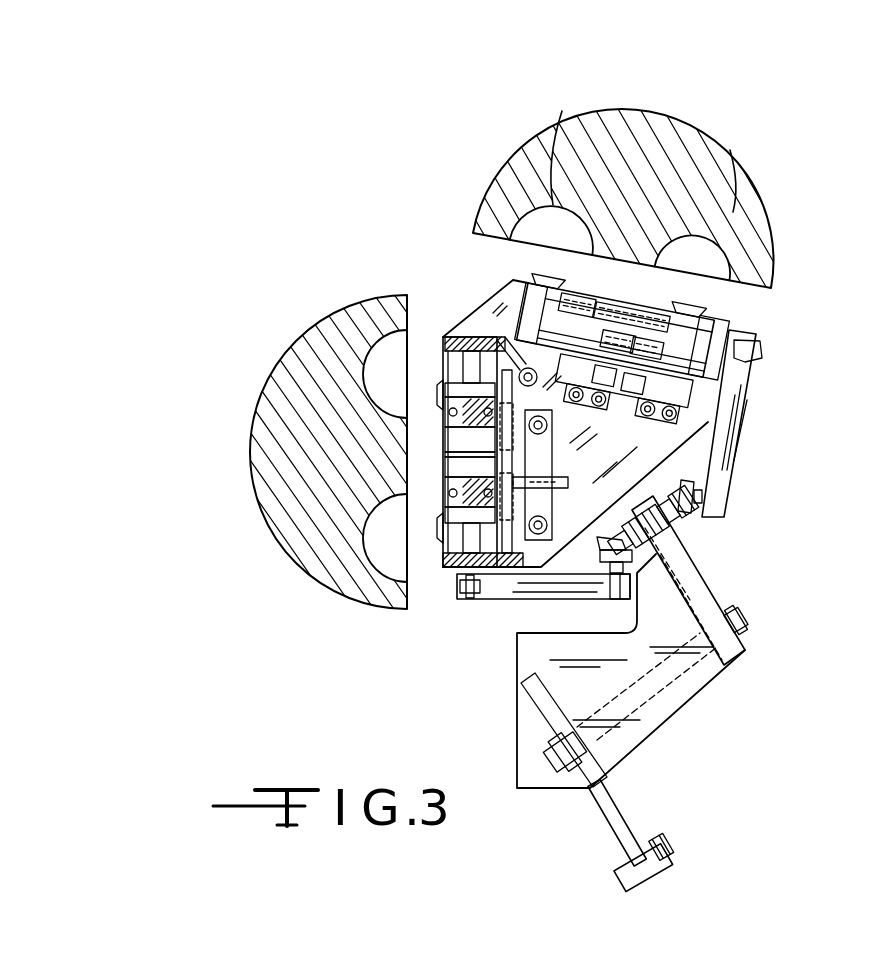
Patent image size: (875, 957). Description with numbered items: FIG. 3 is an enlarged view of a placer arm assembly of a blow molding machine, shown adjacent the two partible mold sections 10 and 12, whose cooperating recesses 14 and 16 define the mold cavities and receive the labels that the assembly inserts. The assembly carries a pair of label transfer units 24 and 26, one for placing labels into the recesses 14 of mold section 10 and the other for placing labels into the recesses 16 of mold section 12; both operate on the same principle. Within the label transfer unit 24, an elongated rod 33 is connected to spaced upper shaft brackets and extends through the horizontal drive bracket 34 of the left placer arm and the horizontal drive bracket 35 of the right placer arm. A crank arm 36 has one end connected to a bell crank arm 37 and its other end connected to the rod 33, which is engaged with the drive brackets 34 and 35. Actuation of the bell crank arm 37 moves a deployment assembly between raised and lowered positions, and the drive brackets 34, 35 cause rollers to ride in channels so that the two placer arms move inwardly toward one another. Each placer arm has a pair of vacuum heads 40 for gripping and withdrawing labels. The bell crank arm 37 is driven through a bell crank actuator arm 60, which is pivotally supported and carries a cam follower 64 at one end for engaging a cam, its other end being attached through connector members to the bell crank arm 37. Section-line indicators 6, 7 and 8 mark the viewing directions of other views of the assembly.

The mold section 10 is at (667, 143).
The mold section 12 is at (260, 433).
The recesses 14 is at (560, 120).
The recesses 16 is at (372, 350).
The label transfer unit 24 is at (433, 565).
The label transfer unit 26 is at (745, 323).
The elongated rod 33 is at (448, 567).
The horizontal drive bracket 34 is at (447, 490).
The horizontal drive bracket 35 is at (447, 410).
The crank arm 36 is at (498, 600).
The bell crank arm 37 is at (687, 547).
The vacuum heads 40 is at (432, 343).
The bell crank actuator arm 60 is at (625, 810).
The cam follower 64 is at (663, 883).
The section line 6- 6 is at (437, 245).
The section line 7- 7 is at (472, 108).
The section line 8- 8 is at (425, 636).